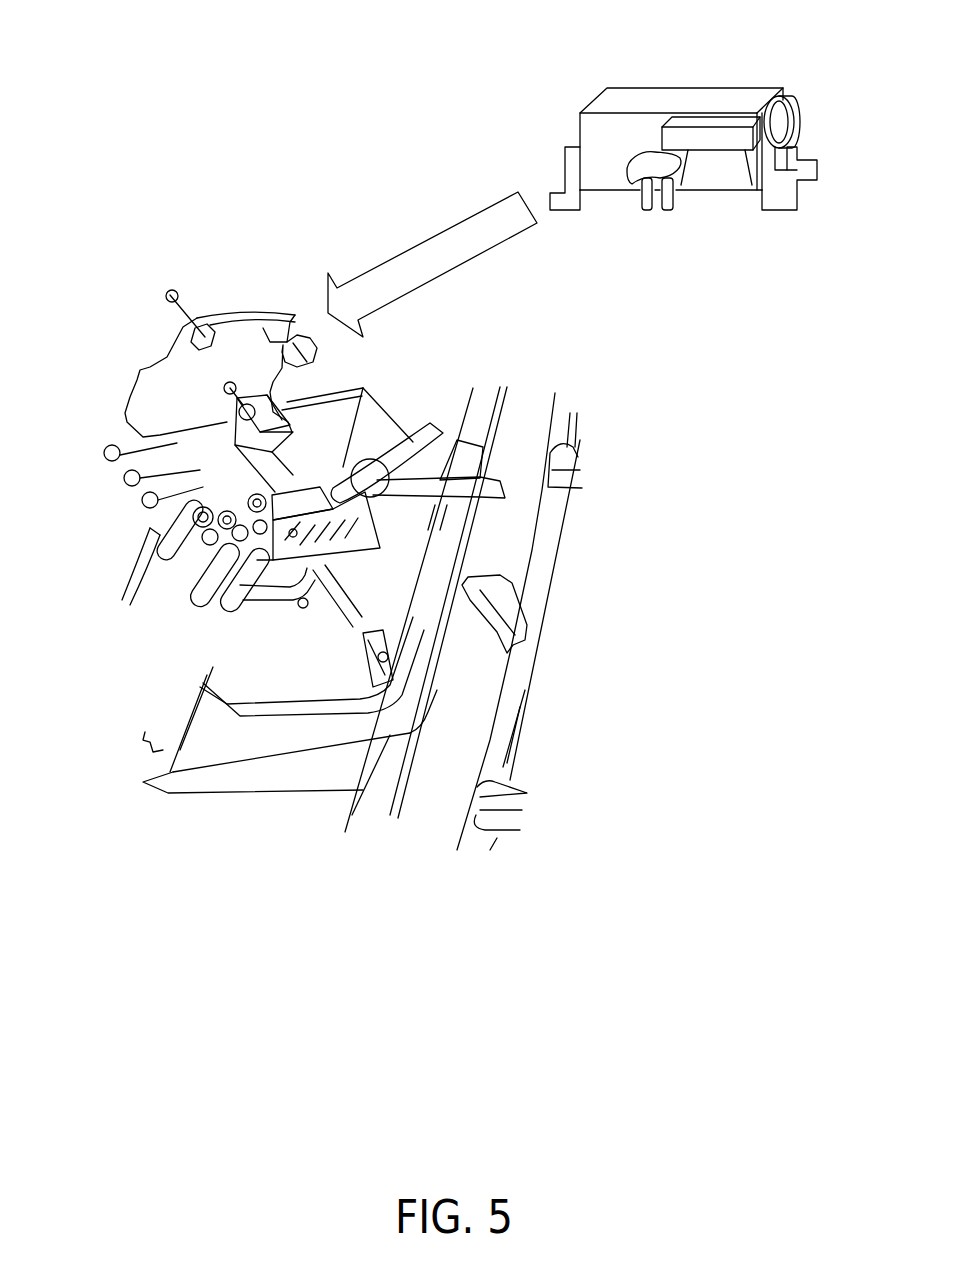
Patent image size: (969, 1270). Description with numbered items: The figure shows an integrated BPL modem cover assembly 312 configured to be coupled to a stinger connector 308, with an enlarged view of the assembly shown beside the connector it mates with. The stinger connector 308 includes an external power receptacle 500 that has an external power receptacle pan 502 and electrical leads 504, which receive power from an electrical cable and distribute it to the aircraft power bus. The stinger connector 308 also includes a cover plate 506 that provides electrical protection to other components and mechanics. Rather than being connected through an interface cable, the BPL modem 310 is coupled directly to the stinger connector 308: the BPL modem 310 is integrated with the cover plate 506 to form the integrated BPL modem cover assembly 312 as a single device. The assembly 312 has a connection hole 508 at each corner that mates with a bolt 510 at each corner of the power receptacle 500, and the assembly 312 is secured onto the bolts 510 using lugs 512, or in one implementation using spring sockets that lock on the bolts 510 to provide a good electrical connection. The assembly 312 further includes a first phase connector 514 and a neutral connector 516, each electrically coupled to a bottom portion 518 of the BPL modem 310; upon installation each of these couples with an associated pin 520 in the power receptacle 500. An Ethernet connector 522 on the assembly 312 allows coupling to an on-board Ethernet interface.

The stinger connector 308 is at (75, 640).
The BPL modem 310 is at (701, 79).
The integrated BPL modem cover assembly 312 is at (527, 185).
The external power receptacle 500 is at (503, 618).
The external power receptacle pan 502 is at (422, 660).
The electrical leads 504 is at (89, 548).
The cover plate 506 is at (171, 363).
The connection hole 508 is at (463, 427).
The bolt 510 is at (205, 668).
The lugs 512 is at (110, 470).
The first phase connector 514 is at (698, 236).
The neutral connector 516 is at (621, 236).
The bottom portion 518 is at (715, 208).
The pin 520 is at (199, 496).
The Ethernet connector 522 is at (809, 103).